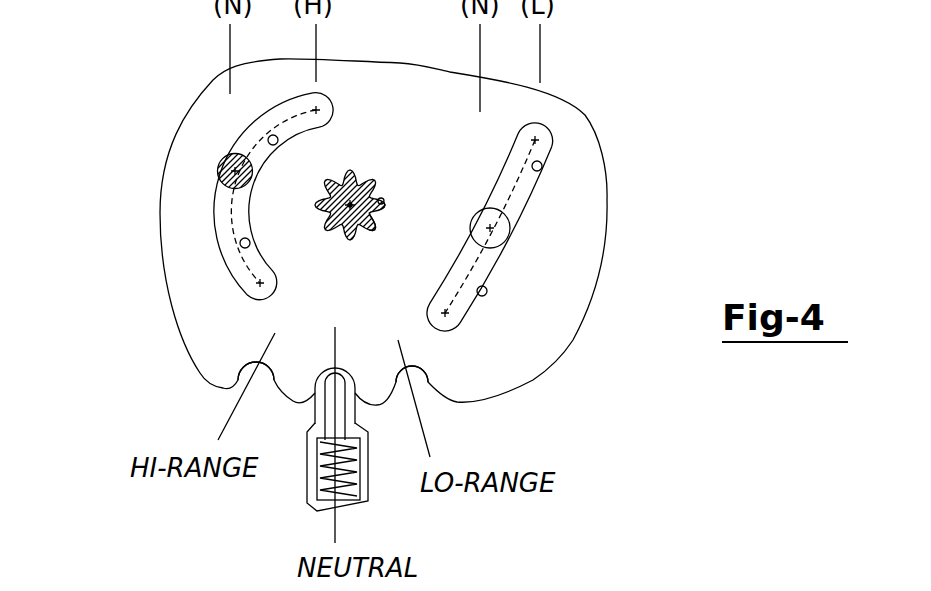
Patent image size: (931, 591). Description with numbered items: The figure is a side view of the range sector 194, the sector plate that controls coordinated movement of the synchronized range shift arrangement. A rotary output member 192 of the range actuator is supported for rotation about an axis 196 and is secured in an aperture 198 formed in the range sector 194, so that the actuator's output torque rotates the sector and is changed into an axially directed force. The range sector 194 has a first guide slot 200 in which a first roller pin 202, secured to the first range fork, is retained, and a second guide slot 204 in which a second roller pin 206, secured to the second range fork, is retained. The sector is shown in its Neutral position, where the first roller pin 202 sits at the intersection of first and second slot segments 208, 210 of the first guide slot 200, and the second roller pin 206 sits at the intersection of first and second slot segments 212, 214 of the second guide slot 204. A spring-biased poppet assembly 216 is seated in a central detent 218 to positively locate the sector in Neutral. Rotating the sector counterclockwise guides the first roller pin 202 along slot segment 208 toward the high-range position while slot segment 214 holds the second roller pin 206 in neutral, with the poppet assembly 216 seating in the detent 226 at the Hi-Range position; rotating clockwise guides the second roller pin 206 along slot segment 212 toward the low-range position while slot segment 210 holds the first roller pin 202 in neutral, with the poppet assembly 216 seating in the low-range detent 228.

The rotary output member 192 is at (352, 241).
The range sector 194 is at (582, 112).
The axis 196 is at (352, 200).
The aperture 198 is at (386, 203).
The first guide slot 200 is at (230, 280).
The first roller pin 202 is at (222, 165).
The second guide slot 204 is at (503, 270).
The second roller pin 206 is at (511, 226).
The first slot segment 208 is at (278, 143).
The second slot segment 210 is at (250, 247).
The first slot segment 212 is at (542, 168).
The second slot segment 214 is at (487, 294).
The spring-biased poppet assembly 216 is at (318, 406).
The central detent 218 is at (368, 394).
The hi-range detent bump 226 is at (247, 373).
The low-range detent 228 is at (440, 377).